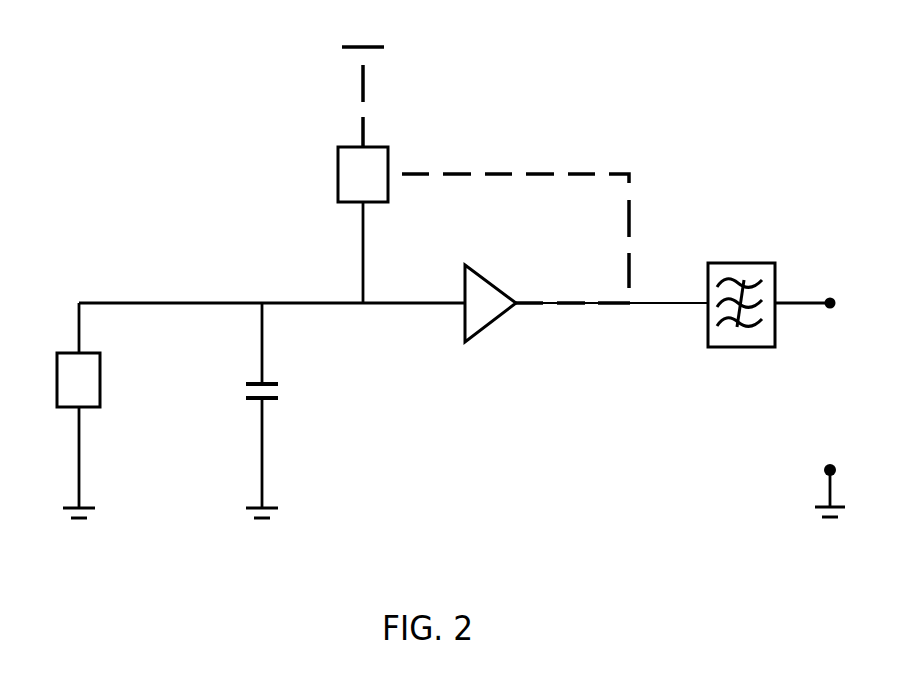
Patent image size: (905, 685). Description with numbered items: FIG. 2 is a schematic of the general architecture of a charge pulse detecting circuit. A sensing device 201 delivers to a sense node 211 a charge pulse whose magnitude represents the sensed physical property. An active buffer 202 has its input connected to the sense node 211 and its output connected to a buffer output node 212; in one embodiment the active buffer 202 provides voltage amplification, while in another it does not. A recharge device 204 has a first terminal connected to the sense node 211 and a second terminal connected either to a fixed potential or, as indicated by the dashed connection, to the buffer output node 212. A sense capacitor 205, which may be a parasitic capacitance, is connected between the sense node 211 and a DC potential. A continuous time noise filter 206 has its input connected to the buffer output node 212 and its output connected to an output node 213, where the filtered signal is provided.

The sensing device 201 is at (56, 410).
The active buffer 202 is at (496, 313).
The recharge device 204 is at (457, 175).
The sense capacitor 205 is at (277, 410).
The continuous time noise filter 206 is at (741, 326).
The sense node 211 is at (272, 285).
The buffer output node 212 is at (612, 283).
The output node 213 is at (806, 284).